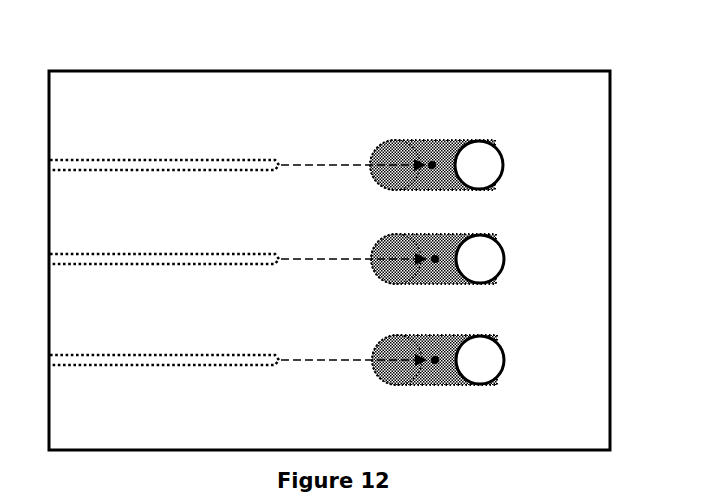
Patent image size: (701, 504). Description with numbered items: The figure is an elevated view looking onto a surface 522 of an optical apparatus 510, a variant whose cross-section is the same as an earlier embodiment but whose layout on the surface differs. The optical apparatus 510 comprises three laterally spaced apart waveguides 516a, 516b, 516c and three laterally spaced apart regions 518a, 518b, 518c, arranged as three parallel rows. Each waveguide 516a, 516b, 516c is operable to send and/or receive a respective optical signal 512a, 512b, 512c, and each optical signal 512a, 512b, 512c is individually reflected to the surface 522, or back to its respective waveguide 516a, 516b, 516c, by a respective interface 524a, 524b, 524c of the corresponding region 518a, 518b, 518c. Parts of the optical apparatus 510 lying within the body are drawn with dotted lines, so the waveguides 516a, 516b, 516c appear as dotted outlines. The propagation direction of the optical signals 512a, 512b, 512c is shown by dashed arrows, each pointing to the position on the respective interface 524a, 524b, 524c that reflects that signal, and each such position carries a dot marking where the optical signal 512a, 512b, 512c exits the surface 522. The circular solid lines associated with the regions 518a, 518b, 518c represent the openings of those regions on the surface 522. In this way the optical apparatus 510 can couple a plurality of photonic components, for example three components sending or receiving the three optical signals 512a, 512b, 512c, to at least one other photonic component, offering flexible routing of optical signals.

The optical apparatus 510 is at (58, 60).
The surface 522 is at (173, 106).
The waveguide 516a is at (90, 159).
The waveguide 516b is at (90, 253).
The waveguide 516c is at (90, 354).
The optical signal 512a is at (353, 155).
The optical signal 512b is at (354, 249).
The optical signal 512c is at (354, 350).
The region 518a is at (475, 161).
The region 518b is at (475, 261).
The region 518c is at (482, 362).
The interface 524a is at (443, 167).
The interface 524b is at (445, 261).
The interface 524c is at (445, 362).